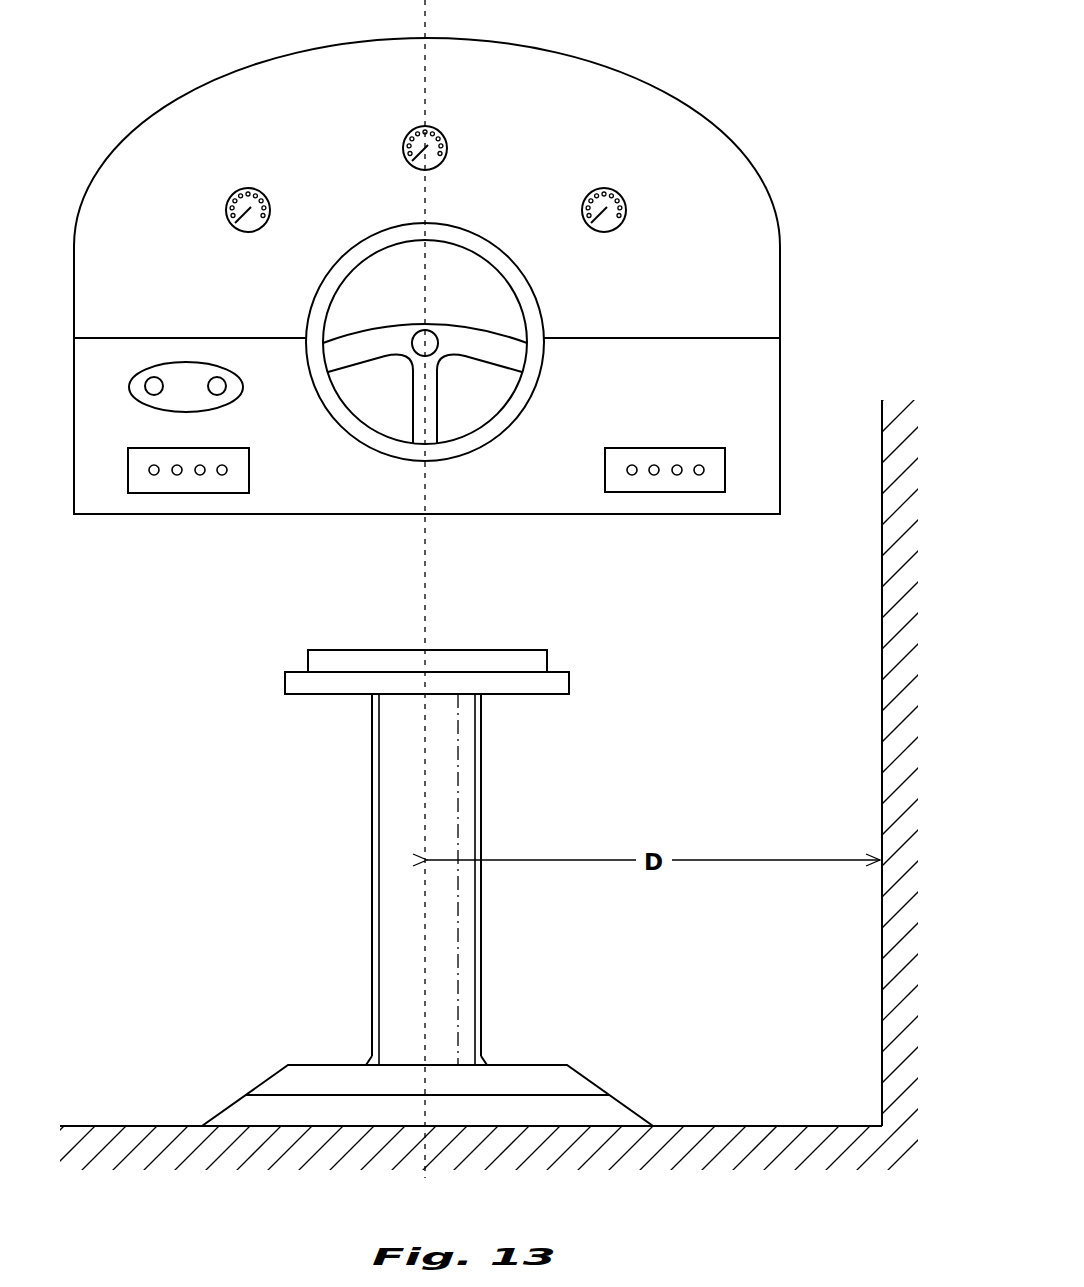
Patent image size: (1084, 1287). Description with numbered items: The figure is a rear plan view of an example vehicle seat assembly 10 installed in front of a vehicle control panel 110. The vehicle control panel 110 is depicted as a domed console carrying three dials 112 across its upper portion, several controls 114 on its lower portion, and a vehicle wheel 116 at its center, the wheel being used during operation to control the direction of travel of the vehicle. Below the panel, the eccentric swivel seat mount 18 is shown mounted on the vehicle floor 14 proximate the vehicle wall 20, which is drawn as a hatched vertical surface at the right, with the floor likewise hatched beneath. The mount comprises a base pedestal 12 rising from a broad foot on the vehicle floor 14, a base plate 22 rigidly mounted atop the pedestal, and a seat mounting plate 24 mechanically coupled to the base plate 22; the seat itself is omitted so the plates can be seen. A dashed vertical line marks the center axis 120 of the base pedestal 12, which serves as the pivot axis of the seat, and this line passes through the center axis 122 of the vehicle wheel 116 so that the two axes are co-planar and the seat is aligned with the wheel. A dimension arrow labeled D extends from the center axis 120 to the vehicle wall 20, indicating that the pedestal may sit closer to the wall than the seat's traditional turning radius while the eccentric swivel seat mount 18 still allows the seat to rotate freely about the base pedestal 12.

The vehicle seat assembly 10 is at (566, 760).
The base pedestal 12 is at (467, 984).
The vehicle floor 14 is at (770, 1146).
The eccentric swivel seat mount 18 is at (243, 762).
The vehicle wall 20 is at (882, 439).
The base plate 22 is at (336, 686).
The seat mounting plate 24 is at (336, 661).
The vehicle control panel 110 is at (779, 152).
The dials 112 is at (440, 126).
The controls 114 is at (243, 393).
The vehicle wheel 116 is at (545, 301).
The center axis 120 is at (427, 610).
The center axis 122 is at (433, 339).